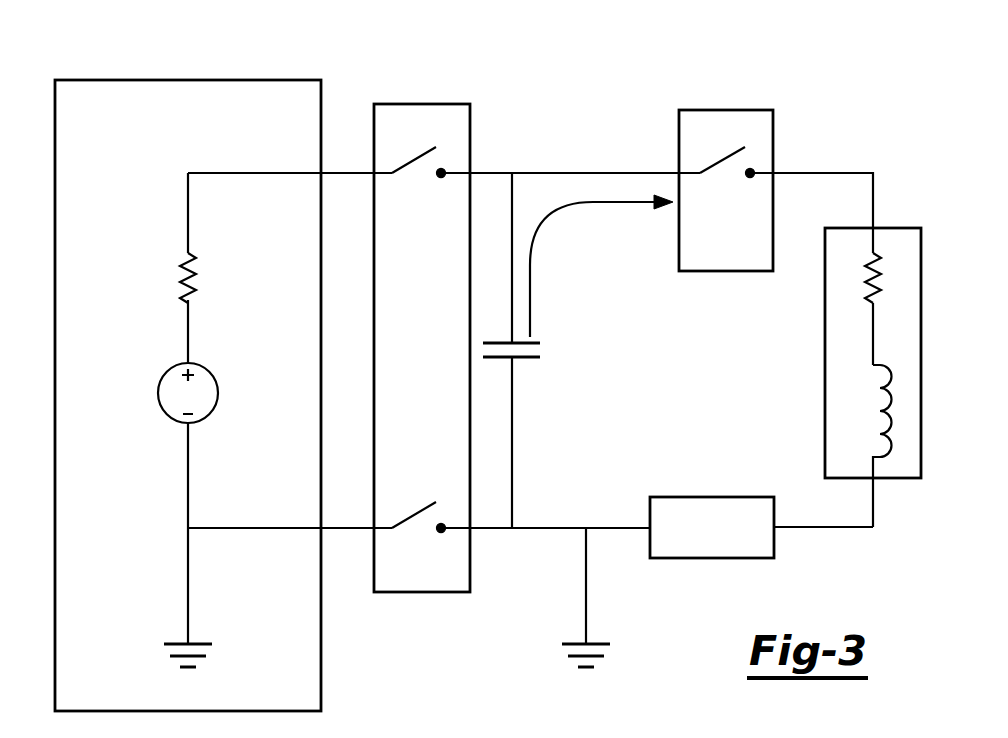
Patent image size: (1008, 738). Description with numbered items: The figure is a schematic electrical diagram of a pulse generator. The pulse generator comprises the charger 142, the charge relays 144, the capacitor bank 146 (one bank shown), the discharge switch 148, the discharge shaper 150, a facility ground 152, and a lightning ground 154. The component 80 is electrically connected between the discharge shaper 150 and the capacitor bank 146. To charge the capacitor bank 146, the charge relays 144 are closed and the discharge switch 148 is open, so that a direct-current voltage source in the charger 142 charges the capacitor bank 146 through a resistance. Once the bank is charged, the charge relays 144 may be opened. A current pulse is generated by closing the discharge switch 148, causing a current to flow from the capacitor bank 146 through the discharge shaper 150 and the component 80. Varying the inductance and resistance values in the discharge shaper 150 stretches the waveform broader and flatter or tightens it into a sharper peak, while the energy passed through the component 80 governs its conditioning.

The charger 142 is at (190, 80).
The charge relays 144 is at (422, 104).
The capacitor bank 146 is at (522, 358).
The discharge switch 148 is at (725, 110).
The discharge shaper 150 is at (907, 228).
The facility ground 152 is at (188, 590).
The lightning ground 154 is at (586, 587).
The component 80 is at (712, 497).